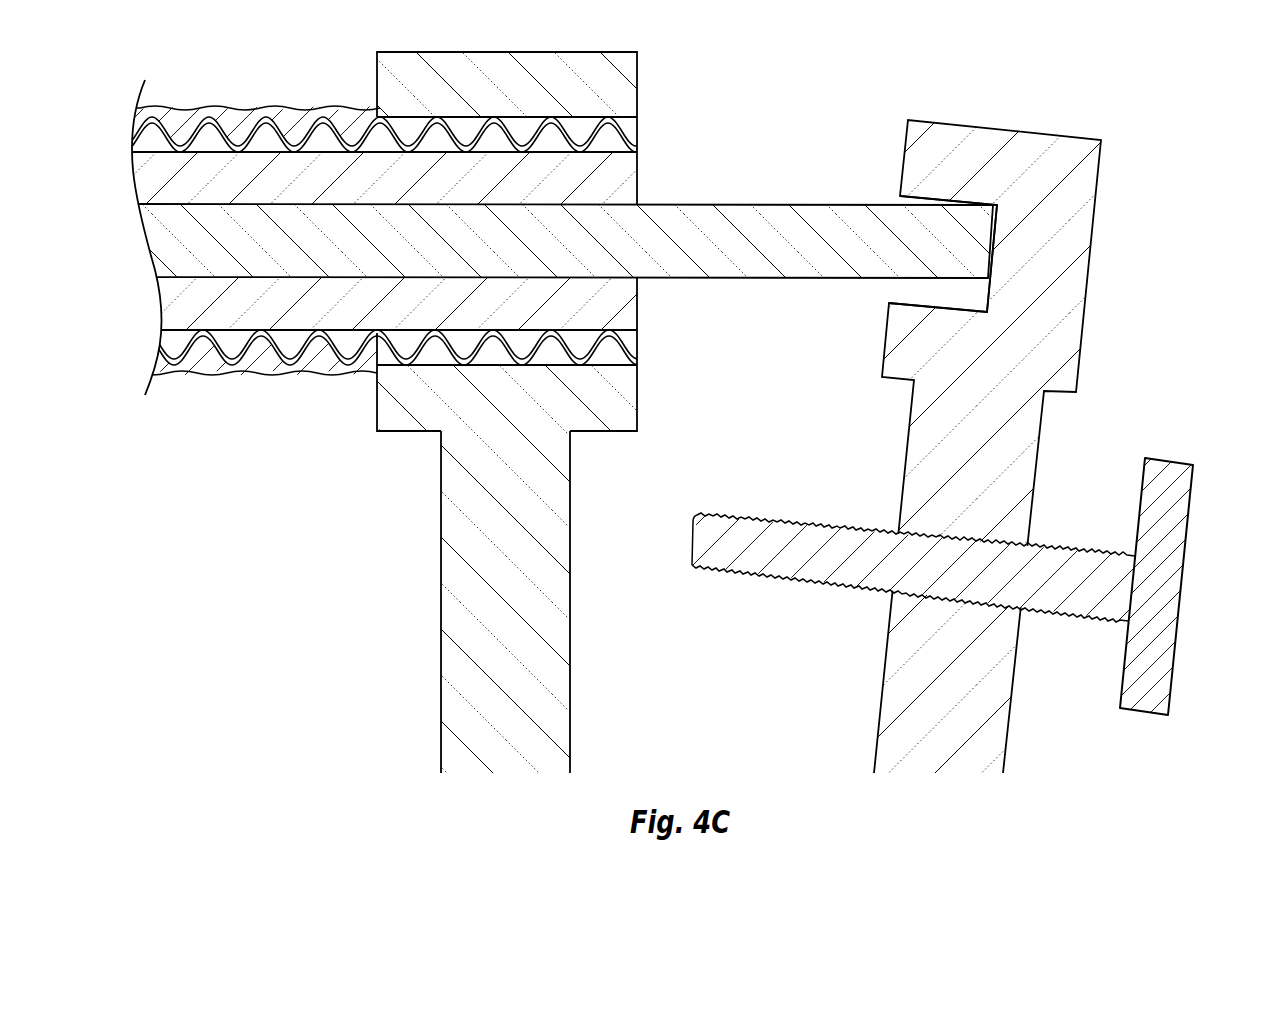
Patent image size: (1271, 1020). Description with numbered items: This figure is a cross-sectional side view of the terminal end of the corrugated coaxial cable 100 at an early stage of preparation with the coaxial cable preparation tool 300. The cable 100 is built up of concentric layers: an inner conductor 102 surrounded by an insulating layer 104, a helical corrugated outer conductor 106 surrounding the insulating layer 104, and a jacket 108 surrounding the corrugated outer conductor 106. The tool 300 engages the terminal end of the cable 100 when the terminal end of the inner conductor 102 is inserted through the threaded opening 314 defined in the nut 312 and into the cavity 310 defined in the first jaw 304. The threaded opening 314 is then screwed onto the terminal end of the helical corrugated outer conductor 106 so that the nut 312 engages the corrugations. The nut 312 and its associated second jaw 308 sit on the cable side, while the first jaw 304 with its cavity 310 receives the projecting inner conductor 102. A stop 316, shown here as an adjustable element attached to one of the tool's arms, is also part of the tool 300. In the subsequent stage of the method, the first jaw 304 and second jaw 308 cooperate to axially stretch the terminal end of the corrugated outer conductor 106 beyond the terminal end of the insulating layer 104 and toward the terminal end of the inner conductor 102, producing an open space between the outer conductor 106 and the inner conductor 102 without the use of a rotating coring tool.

The corrugated coaxial cable 100 is at (529, 210).
The inner conductor 102 is at (150, 243).
The insulating layer 104 is at (140, 178).
The corrugated outer conductor 106 is at (323, 117).
The jacket 108 is at (243, 109).
The coaxial cable preparation tool 300 is at (800, 397).
The first jaw 304 is at (984, 446).
The second jaw 308 is at (452, 581).
The cavity 310 is at (893, 291).
The nut 312 is at (494, 397).
The threaded opening 314 is at (524, 125).
The stop 316 is at (1050, 538).